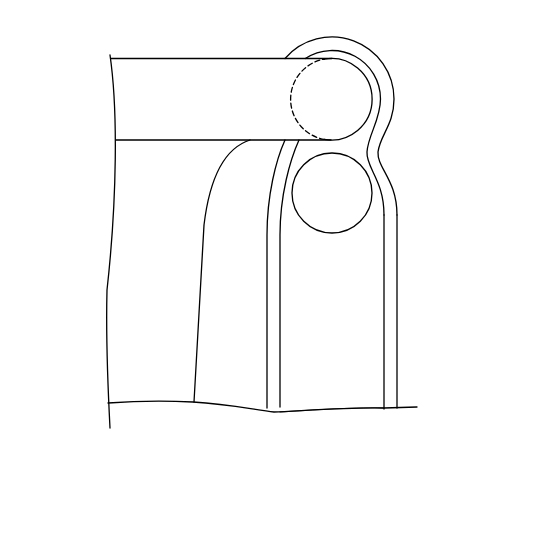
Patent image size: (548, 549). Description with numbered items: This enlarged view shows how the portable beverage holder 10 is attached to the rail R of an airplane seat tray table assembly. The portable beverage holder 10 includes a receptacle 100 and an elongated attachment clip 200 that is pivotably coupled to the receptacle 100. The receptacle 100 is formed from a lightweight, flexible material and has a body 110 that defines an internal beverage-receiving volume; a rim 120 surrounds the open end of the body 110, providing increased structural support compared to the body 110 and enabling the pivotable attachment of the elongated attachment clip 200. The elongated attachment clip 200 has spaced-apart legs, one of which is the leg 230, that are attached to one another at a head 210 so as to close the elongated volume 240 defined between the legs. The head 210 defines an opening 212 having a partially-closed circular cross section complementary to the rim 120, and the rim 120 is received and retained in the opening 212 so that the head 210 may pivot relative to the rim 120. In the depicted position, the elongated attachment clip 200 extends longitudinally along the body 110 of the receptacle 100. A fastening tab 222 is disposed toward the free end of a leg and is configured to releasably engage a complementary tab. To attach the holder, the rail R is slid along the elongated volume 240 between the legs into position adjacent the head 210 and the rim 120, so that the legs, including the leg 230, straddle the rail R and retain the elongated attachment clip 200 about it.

The portable beverage holder 10 is at (228, 42).
The receptacle 100 is at (180, 42).
The body 110 is at (120, 265).
The rim 120 is at (130, 97).
The elongated attachment clip 200 is at (412, 284).
The head 210 is at (382, 60).
The opening 212 is at (336, 58).
The fastening tab 222 is at (398, 364).
The leg 230 is at (267, 385).
The elongated volume 240 is at (341, 388).
The rail R is at (343, 189).